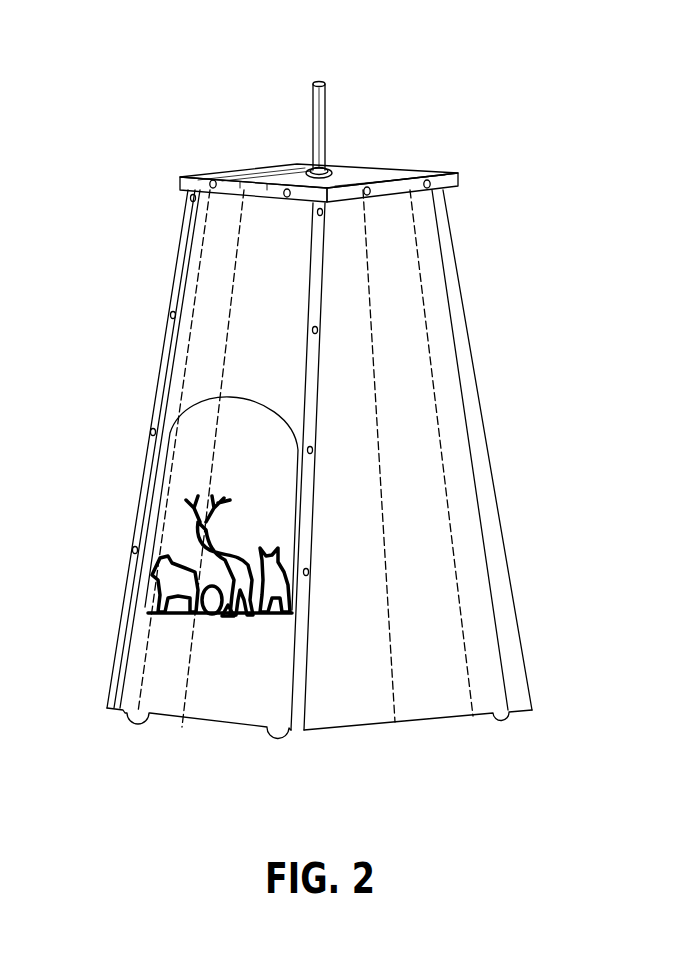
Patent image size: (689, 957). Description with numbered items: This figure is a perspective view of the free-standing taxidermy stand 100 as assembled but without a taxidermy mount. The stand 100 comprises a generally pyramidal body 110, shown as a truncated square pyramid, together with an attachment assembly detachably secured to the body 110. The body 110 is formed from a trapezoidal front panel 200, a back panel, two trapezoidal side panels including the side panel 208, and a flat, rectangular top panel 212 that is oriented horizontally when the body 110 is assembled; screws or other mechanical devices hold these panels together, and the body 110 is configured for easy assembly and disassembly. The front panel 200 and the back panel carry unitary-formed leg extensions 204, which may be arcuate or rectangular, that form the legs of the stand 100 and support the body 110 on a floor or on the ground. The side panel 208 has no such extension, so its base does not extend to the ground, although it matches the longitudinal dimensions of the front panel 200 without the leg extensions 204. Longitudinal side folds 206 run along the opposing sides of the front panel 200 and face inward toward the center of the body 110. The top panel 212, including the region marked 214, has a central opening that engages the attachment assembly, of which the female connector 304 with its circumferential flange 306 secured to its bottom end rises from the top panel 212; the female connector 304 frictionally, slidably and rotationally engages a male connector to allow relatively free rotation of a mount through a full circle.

The free-standing taxidermy stand 100 is at (172, 88).
The body 110 is at (488, 388).
The front panel 200 is at (208, 270).
The leg extensions 204 is at (136, 726).
The longitudinal side folds 206 is at (110, 694).
The side panel 208 is at (477, 538).
The top panel 212 is at (393, 174).
The top plate edge flange 214 is at (180, 181).
The female connector 304 is at (313, 118).
The circumferential flange 306 is at (302, 177).